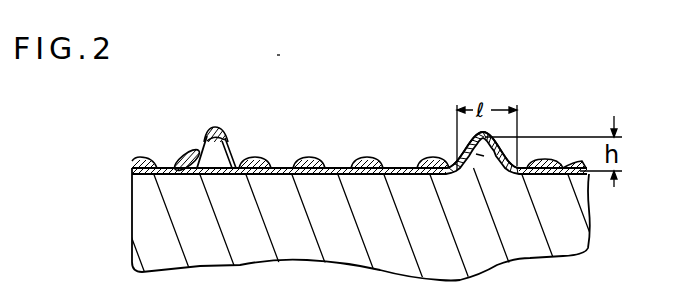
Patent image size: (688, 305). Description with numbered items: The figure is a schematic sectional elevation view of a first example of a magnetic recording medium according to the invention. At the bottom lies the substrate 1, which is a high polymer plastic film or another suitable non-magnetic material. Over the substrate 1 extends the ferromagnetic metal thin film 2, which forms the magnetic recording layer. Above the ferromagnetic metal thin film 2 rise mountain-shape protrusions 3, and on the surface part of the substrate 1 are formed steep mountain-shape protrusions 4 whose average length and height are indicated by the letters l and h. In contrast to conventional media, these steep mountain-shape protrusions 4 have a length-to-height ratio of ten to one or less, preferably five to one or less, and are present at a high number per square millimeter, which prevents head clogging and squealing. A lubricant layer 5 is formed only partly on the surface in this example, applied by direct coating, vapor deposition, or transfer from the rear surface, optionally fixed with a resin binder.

The substrate 1 is at (143, 233).
The ferromagnetic metal thin film 2 is at (155, 176).
The mountain-shape protrusions 3 is at (214, 145).
The steep mountain-shape protrusions 4 is at (471, 155).
The lubricant layer 5 is at (205, 128).